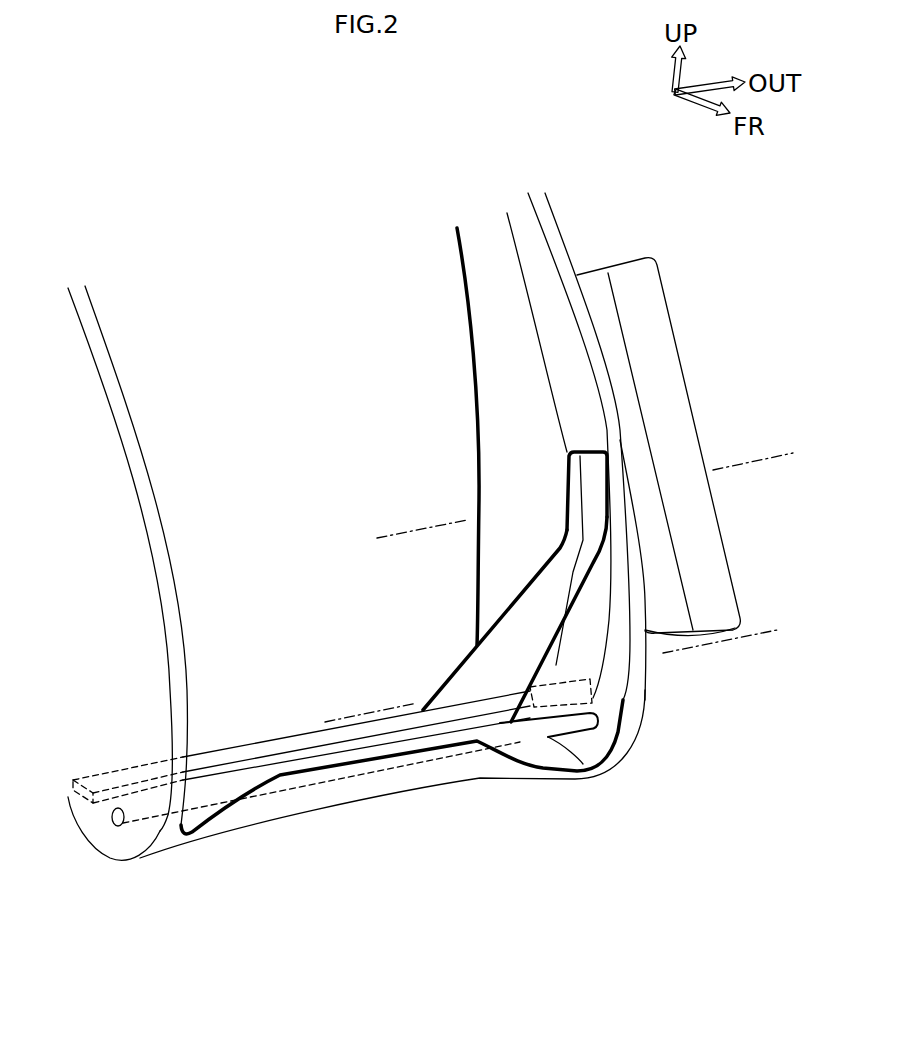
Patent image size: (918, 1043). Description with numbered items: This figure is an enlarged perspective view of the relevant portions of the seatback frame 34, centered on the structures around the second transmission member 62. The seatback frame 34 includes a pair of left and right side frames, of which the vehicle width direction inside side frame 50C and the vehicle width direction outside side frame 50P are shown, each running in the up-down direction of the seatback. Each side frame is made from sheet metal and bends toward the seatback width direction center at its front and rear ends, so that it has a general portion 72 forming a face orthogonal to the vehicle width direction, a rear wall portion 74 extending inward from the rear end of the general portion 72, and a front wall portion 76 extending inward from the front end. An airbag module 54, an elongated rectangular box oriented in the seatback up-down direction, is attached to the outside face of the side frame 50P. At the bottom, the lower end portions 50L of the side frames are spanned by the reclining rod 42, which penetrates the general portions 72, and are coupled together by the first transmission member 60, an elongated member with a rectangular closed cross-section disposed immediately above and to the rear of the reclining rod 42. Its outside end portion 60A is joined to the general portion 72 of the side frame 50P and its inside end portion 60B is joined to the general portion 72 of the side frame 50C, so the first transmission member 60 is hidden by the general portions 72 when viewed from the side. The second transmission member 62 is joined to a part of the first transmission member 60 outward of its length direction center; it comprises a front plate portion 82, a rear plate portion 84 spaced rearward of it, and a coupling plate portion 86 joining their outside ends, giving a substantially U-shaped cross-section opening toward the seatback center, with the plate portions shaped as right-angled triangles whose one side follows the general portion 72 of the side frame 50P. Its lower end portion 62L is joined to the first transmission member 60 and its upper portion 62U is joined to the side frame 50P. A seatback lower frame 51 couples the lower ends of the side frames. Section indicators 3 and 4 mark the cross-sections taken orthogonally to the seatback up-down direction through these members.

The seatback frame 34 is at (157, 188).
The side frame 50C is at (98, 312).
The side frame 50P is at (463, 277).
The lower end portion 50L is at (107, 843).
The front wall portion 76 is at (105, 362).
The general portion 72 is at (93, 415).
The rear wall portion 74 is at (490, 303).
The airbag module 54 is at (668, 333).
The second transmission member 62 is at (474, 623).
The upper portion 62U is at (590, 460).
The lower end portion 62L is at (547, 708).
The coupling plate portion 86 is at (592, 557).
The rear plate portion 84 is at (508, 621).
The front plate portion 82 is at (550, 667).
The first transmission member 60 is at (240, 750).
The end portion 60A is at (592, 707).
The end portion 60B is at (95, 777).
The reclining rod 42 is at (207, 800).
The seatback lower frame 51 is at (357, 788).
The section line 3 is at (323, 722).
The section line 4 is at (377, 538).